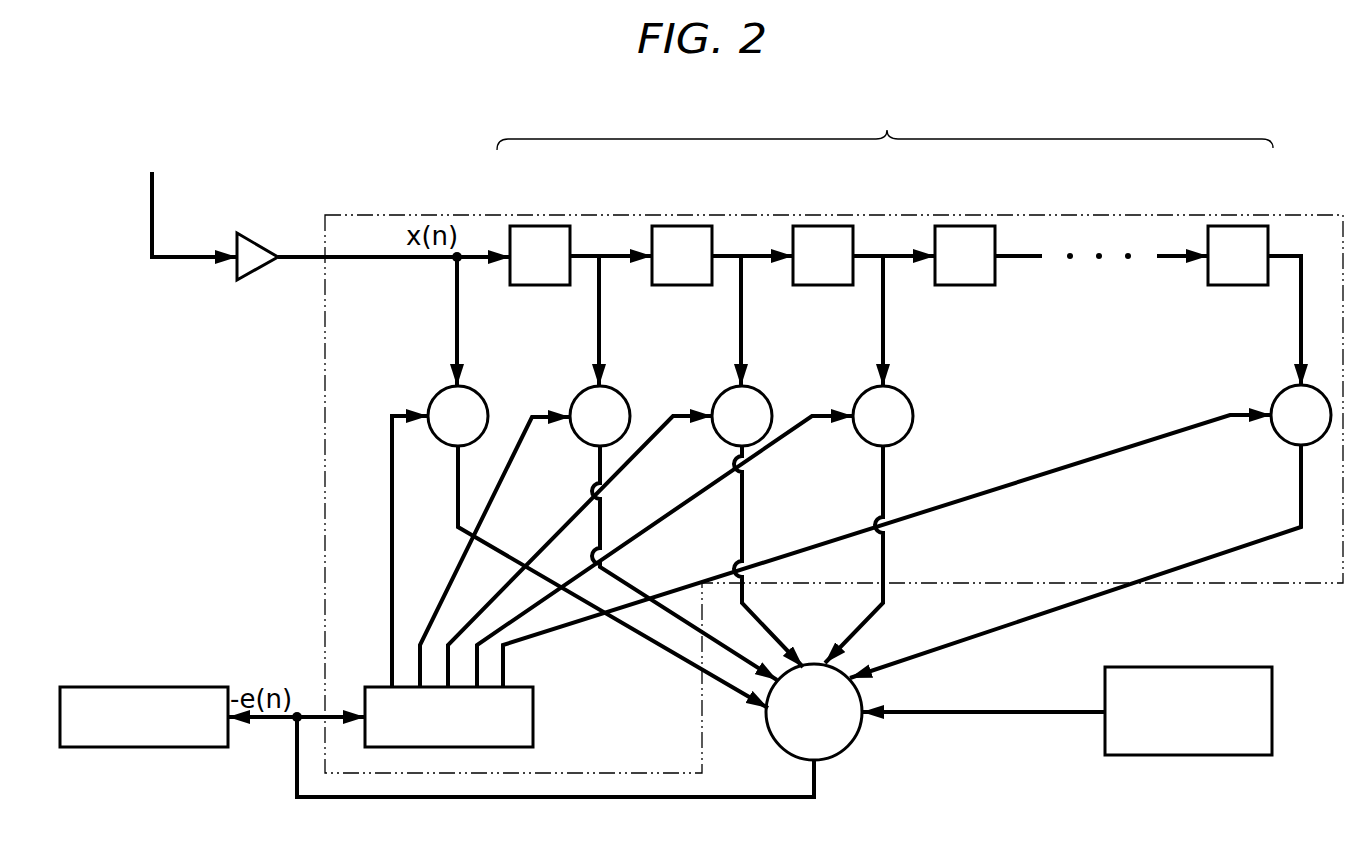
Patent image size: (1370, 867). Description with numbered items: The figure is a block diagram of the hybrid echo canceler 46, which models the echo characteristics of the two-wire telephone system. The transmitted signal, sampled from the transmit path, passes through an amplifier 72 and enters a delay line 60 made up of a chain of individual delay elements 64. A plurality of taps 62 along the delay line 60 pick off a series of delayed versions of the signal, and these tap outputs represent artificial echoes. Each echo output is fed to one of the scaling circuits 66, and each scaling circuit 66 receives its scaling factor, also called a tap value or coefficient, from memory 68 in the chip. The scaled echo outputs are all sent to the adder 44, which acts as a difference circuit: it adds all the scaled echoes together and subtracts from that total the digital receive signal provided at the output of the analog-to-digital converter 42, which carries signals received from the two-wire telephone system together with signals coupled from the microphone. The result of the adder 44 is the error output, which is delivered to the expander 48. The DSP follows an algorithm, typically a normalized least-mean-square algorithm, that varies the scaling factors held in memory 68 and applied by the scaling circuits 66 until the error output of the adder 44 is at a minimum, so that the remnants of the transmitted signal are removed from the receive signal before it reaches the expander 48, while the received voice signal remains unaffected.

The amplifier 72 is at (250, 234).
The delay line 60 is at (885, 190).
The delay elements 64 is at (538, 226).
The taps 62 is at (455, 333).
The scaling circuits 66 is at (486, 401).
The hybrid echo canceler 46 is at (325, 437).
The memory 68 is at (533, 715).
The adder 44 is at (768, 722).
The expander 48 is at (143, 687).
The analog-to-digital converter 42 is at (1185, 667).